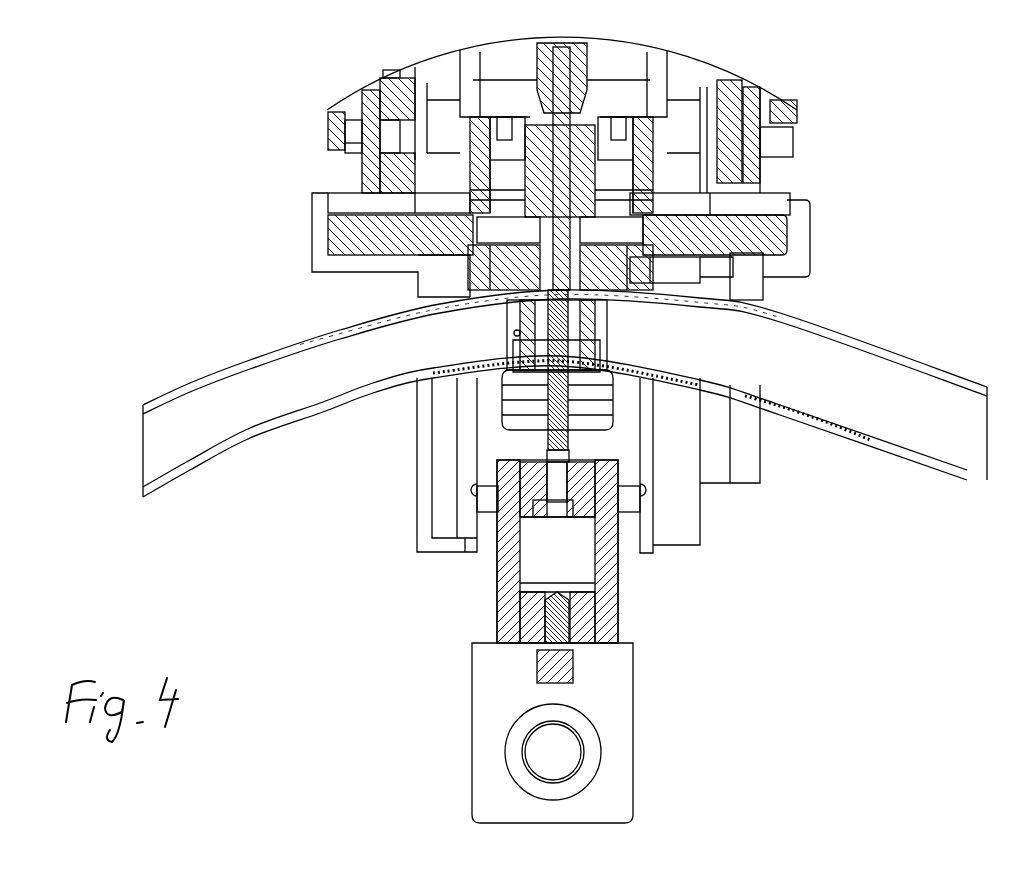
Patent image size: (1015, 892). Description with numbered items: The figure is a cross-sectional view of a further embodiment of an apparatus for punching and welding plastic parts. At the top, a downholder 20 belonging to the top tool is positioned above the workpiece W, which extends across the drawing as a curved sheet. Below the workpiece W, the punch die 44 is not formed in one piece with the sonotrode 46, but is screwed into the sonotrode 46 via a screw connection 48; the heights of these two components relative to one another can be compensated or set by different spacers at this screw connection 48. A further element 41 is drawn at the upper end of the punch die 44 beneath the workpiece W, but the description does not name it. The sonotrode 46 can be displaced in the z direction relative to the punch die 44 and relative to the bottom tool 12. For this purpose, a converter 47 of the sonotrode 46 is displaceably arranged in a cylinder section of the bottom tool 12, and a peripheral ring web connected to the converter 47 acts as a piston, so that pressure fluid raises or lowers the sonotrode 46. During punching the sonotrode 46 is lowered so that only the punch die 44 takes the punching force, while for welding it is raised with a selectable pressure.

The downholder 20 is at (757, 240).
The workpiece W is at (832, 335).
The clamp body 41 is at (505, 303).
The punch die 44 is at (573, 375).
The sonotrode 46 is at (605, 368).
The screw connection 48 is at (607, 372).
The converter 47 is at (567, 553).
The bottom tool 12 is at (483, 580).